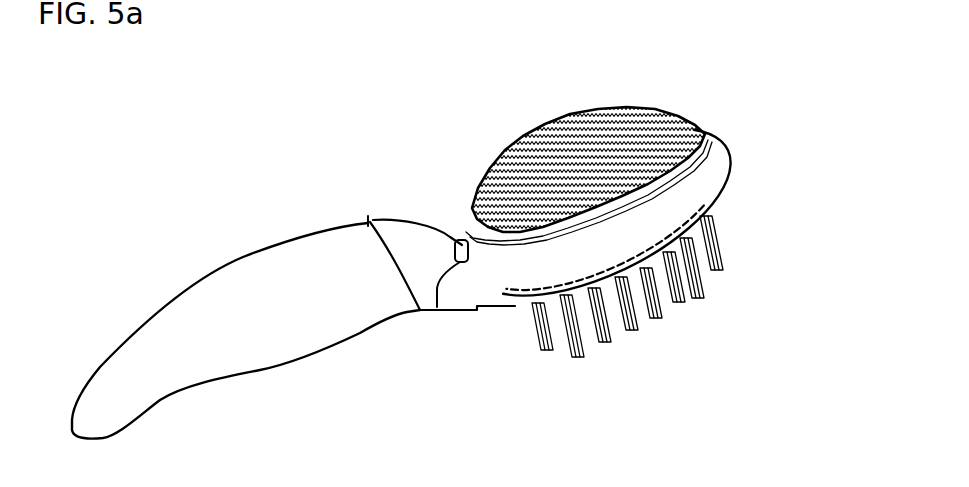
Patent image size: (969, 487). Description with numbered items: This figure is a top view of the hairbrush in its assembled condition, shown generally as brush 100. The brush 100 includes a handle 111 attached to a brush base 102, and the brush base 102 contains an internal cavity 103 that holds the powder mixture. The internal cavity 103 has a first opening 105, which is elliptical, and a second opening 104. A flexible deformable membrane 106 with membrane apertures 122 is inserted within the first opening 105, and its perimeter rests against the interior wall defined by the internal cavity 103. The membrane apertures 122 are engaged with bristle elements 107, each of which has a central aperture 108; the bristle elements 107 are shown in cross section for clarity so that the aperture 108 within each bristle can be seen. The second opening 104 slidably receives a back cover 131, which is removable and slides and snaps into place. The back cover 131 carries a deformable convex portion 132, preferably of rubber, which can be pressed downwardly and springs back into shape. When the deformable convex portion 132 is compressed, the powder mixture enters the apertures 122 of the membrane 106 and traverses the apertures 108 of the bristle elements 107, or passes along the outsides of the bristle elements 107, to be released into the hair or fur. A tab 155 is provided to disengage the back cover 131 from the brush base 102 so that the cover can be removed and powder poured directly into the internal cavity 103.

The brush 100 is at (268, 125).
The brush base 102 is at (722, 155).
The internal cavity 103 is at (707, 187).
The second opening 104 is at (706, 130).
The first opening 105 is at (704, 212).
The flexible deformable membrane 106 is at (517, 302).
The bristle elements 107 is at (692, 300).
The aperture 108 is at (658, 317).
The handle 111 is at (286, 319).
The membrane apertures 122 is at (527, 300).
The back cover 131 is at (606, 106).
The deformable convex portion 132 is at (508, 148).
The tab 155 is at (440, 307).